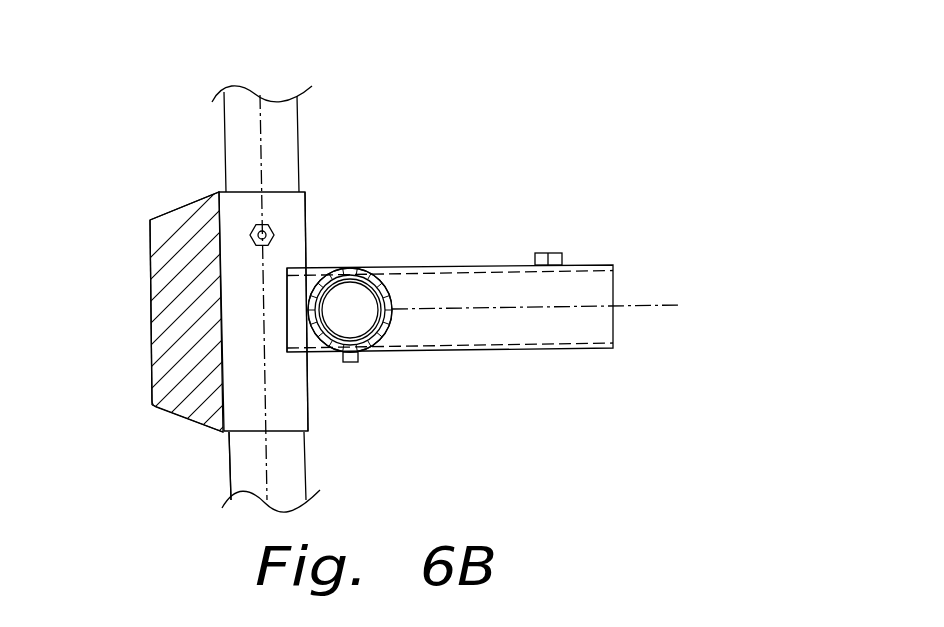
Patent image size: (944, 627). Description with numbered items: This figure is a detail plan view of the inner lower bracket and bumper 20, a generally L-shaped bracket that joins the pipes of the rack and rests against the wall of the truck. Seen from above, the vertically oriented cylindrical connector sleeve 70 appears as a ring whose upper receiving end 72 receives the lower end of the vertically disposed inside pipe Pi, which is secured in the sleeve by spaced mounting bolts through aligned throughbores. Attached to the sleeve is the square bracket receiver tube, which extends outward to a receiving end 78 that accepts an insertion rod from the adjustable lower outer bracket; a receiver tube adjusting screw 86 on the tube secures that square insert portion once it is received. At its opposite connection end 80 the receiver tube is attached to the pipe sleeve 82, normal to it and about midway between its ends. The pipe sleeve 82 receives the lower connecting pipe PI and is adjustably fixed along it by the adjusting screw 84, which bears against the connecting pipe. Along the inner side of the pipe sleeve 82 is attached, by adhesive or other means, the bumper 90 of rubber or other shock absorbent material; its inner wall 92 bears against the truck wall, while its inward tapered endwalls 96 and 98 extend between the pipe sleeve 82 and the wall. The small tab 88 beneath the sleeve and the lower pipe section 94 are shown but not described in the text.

The lower connecting pipe PI is at (297, 133).
The inner lower bracket and bumper 20 is at (309, 206).
The adjusting screw 84 is at (257, 227).
The bumper 90 is at (148, 342).
The inward tapered endwall 98 is at (188, 207).
The inner wall 92 is at (150, 268).
The inward tapered endwall 96 is at (205, 422).
The pipe lower section 94 is at (258, 418).
The receiving end 78 is at (613, 290).
The receiver tube adjusting screw 86 is at (550, 253).
The cylindrical connector sleeve 70 is at (427, 280).
The inside pipe Pi is at (377, 277).
The upper receiving end 72 is at (391, 322).
The lower tab 88 is at (352, 362).
The connection end 80 is at (283, 311).
The pipe sleeve 82 is at (308, 402).